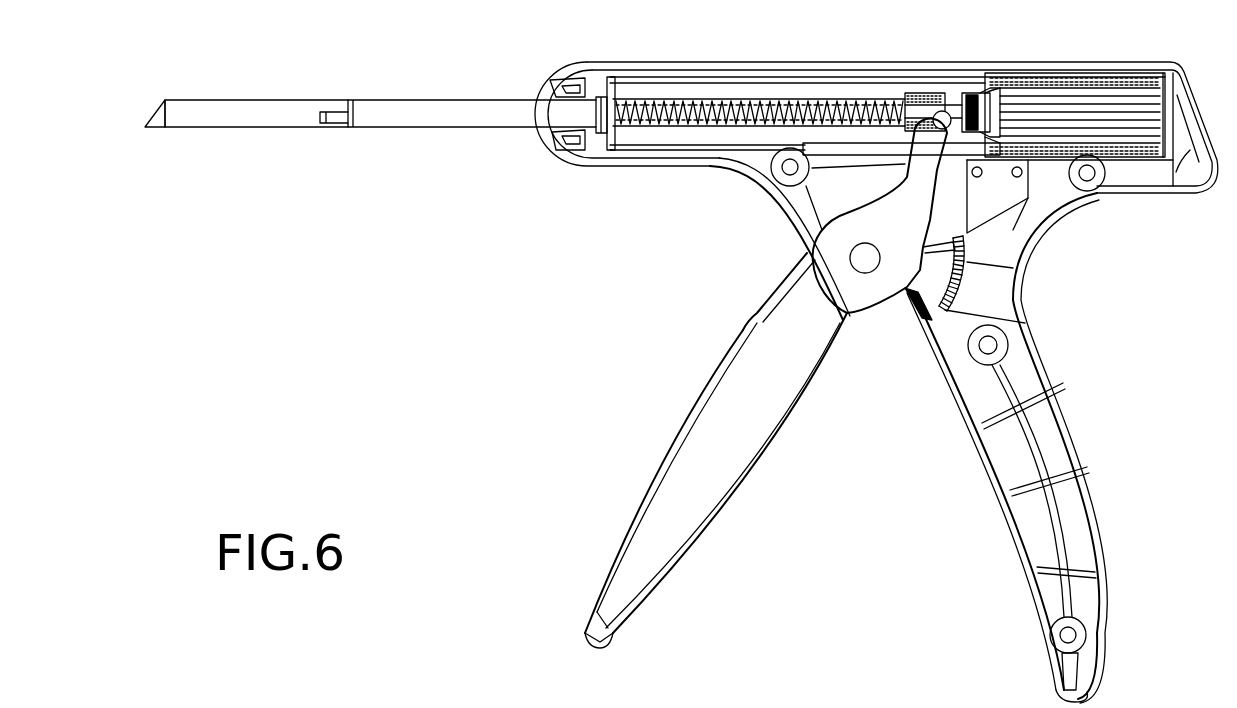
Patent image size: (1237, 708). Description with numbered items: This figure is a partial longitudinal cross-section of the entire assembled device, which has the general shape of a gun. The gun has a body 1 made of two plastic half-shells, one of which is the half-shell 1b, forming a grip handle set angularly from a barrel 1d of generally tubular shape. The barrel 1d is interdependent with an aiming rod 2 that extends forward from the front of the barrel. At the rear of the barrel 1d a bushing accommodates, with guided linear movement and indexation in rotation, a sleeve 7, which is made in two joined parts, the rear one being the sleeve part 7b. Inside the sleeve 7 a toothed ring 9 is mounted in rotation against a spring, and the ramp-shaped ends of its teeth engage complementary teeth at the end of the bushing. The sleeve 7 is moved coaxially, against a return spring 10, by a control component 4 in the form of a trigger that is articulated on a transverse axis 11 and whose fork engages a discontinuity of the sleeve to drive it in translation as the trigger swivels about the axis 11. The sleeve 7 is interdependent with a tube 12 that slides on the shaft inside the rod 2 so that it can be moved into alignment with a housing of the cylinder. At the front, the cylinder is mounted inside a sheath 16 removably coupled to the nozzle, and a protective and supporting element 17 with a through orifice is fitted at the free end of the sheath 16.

The body 1 is at (614, 191).
The half-shell 1b is at (1047, 417).
The barrel 1d is at (688, 62).
The aiming rod 2 is at (415, 107).
The control component 4 is at (713, 497).
The sleeve 7 is at (957, 100).
The sleeve part 7b is at (1100, 92).
The toothed ring 9 is at (990, 100).
The return spring 10 is at (702, 118).
The transverse axis 11 is at (858, 263).
The tube 12 is at (823, 104).
The sheath 16 is at (258, 113).
The protective and supporting element 17 is at (163, 123).